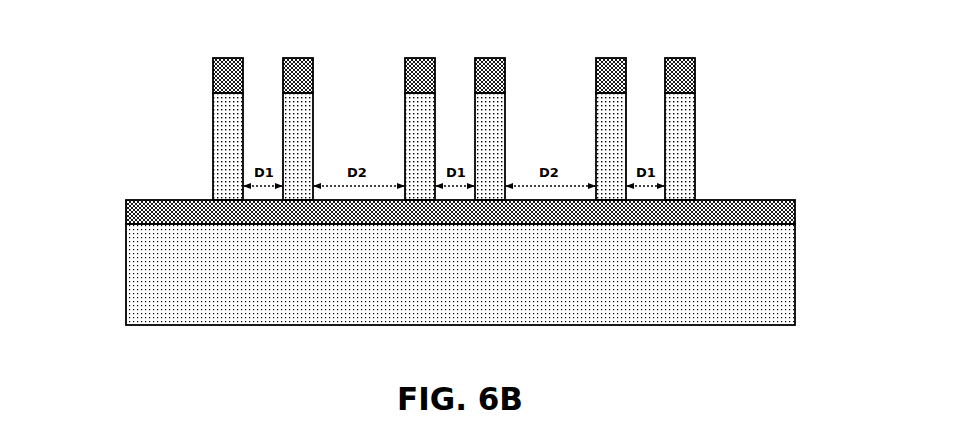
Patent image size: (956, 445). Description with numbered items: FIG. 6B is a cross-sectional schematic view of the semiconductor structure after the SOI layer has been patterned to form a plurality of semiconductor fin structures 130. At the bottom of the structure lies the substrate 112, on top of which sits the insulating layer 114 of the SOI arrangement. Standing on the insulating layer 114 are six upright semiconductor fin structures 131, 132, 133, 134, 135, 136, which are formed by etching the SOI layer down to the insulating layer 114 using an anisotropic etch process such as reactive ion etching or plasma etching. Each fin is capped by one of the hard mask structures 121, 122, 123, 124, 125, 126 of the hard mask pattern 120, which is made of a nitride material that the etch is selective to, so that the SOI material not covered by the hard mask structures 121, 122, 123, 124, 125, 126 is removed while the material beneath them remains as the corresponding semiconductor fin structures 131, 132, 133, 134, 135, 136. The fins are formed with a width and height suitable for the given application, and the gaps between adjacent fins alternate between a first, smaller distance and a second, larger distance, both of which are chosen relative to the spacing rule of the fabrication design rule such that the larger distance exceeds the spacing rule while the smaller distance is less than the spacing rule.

The substrate 112 is at (126, 275).
The insulating layer 114 is at (126, 216).
The hard mask pattern 120 is at (404, 59).
The hard mask structure 121 is at (222, 58).
The hard mask structure 122 is at (294, 58).
The hard mask structure 123 is at (415, 58).
The hard mask structure 124 is at (489, 58).
The hard mask structure 125 is at (608, 58).
The hard mask structure 126 is at (677, 58).
The semiconductor fin structures 130 is at (404, 146).
The semiconductor fin structure 131 is at (238, 124).
The semiconductor fin structure 132 is at (308, 124).
The semiconductor fin structure 133 is at (430, 124).
The semiconductor fin structure 134 is at (500, 124).
The semiconductor fin structure 135 is at (621, 124).
The semiconductor fin structure 136 is at (690, 124).